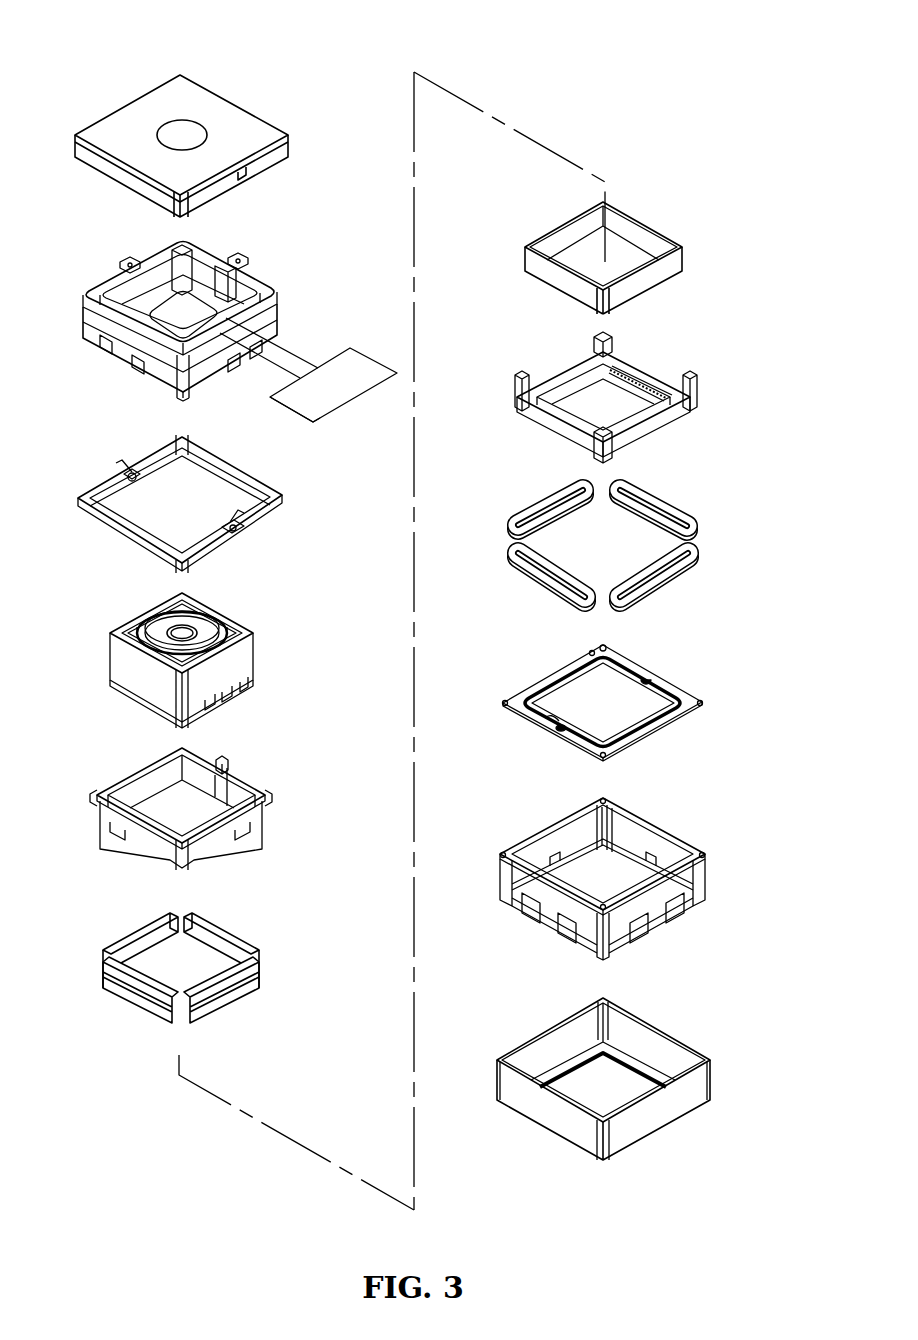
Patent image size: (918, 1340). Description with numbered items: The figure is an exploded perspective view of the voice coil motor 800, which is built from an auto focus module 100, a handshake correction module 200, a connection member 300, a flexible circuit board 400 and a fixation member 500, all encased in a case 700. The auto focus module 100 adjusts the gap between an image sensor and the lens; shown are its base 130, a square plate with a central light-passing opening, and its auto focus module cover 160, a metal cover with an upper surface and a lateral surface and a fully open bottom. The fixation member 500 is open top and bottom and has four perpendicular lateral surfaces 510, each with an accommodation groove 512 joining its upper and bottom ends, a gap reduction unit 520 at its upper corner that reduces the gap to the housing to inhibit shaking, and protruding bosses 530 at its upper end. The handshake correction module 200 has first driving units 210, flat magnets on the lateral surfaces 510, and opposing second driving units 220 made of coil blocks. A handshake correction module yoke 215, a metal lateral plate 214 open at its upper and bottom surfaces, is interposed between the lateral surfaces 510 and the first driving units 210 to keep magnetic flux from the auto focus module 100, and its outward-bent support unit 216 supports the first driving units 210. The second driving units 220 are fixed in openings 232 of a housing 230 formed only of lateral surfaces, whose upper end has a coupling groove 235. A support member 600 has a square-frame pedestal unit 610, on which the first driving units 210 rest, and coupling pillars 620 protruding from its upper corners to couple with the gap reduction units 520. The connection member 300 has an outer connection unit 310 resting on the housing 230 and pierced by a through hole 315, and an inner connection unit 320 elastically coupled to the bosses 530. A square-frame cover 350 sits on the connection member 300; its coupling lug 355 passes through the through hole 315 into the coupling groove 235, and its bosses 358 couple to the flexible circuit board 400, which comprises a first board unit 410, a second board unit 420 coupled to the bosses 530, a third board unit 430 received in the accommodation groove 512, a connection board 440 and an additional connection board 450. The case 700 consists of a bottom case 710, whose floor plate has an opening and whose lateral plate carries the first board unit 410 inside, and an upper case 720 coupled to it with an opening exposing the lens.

The auto focus module 100 is at (197, 660).
The base 130 is at (128, 688).
The auto focus module cover 160 is at (125, 660).
The handshake correction module 200 is at (171, 954).
The first driving unit 210 is at (235, 928).
The metal lateral plate 214 is at (545, 275).
The handshake correction module yoke 215 is at (609, 240).
The support unit 216 is at (665, 288).
The second driving unit 220 is at (660, 492).
The housing 230 is at (636, 877).
The opening 232 is at (650, 905).
The coupling groove 235 is at (605, 800).
The connection member 300 is at (571, 691).
The outer connection unit 310 is at (570, 665).
The through hole 315 is at (605, 645).
The inner connection unit 320 is at (590, 650).
The cover 350 is at (224, 504).
The coupling lug 355 is at (285, 510).
The bosses 358 is at (275, 485).
The flexible circuit board 400 is at (221, 334).
The first board unit 410 is at (152, 362).
The second board unit 420 is at (208, 262).
The third board unit 430 is at (228, 270).
The connection board 440 is at (333, 350).
The additional connection board 450 is at (275, 408).
The fixation member 500 is at (166, 795).
The lateral surface 510 is at (238, 828).
The accommodation groove 512 is at (220, 790).
The gap reduction unit 520 is at (95, 798).
The bosses 530 is at (222, 760).
The support member 600 is at (641, 397).
The pedestal unit 610 is at (542, 420).
The post of frame 620 is at (615, 340).
The case 700 is at (205, 134).
The bottom case 710 is at (682, 1032).
The upper case 720 is at (112, 113).
The voice coil motor 800 is at (518, 63).